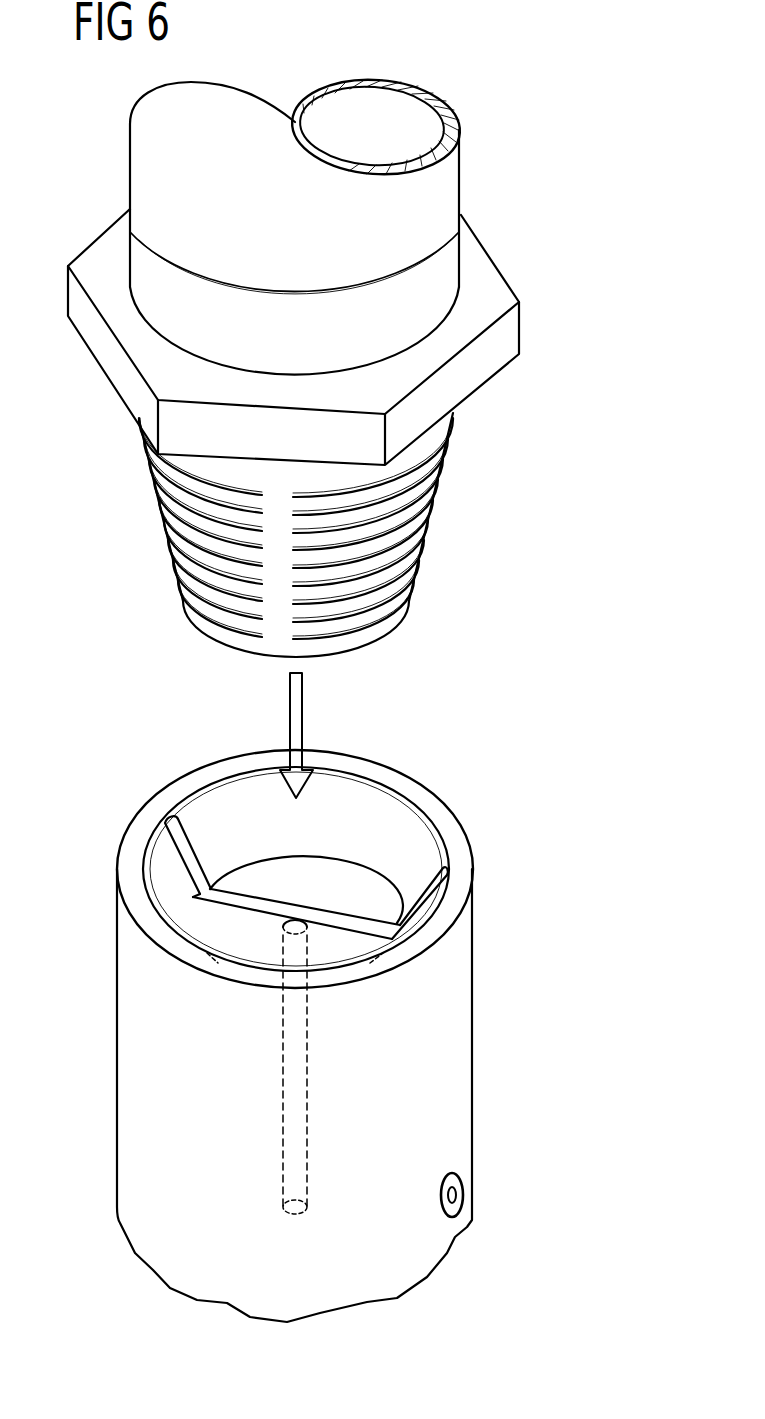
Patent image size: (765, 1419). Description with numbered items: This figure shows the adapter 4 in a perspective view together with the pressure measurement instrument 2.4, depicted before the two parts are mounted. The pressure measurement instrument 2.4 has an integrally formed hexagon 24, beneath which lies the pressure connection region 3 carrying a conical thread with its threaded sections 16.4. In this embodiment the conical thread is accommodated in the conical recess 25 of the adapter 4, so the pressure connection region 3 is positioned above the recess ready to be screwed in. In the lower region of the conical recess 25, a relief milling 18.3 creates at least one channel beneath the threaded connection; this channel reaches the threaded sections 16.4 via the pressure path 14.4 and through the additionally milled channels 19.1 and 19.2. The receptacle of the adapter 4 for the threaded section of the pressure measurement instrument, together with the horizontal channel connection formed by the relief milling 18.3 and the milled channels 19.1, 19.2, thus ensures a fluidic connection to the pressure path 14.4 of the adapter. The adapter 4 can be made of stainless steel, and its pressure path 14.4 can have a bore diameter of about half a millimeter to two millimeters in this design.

The pressure measurement instrument 2.4 is at (445, 186).
The hexagon 24 is at (507, 332).
The pressure connection region 3 is at (277, 513).
The threaded sections 16.4 is at (185, 540).
The conical recess 25 is at (363, 807).
The milled channel 19.2 is at (173, 850).
The milled channel 19.1 is at (417, 897).
The pressure path 14.4 is at (290, 920).
The relief milling 18.3 is at (253, 918).
The adapter 4 is at (452, 1058).